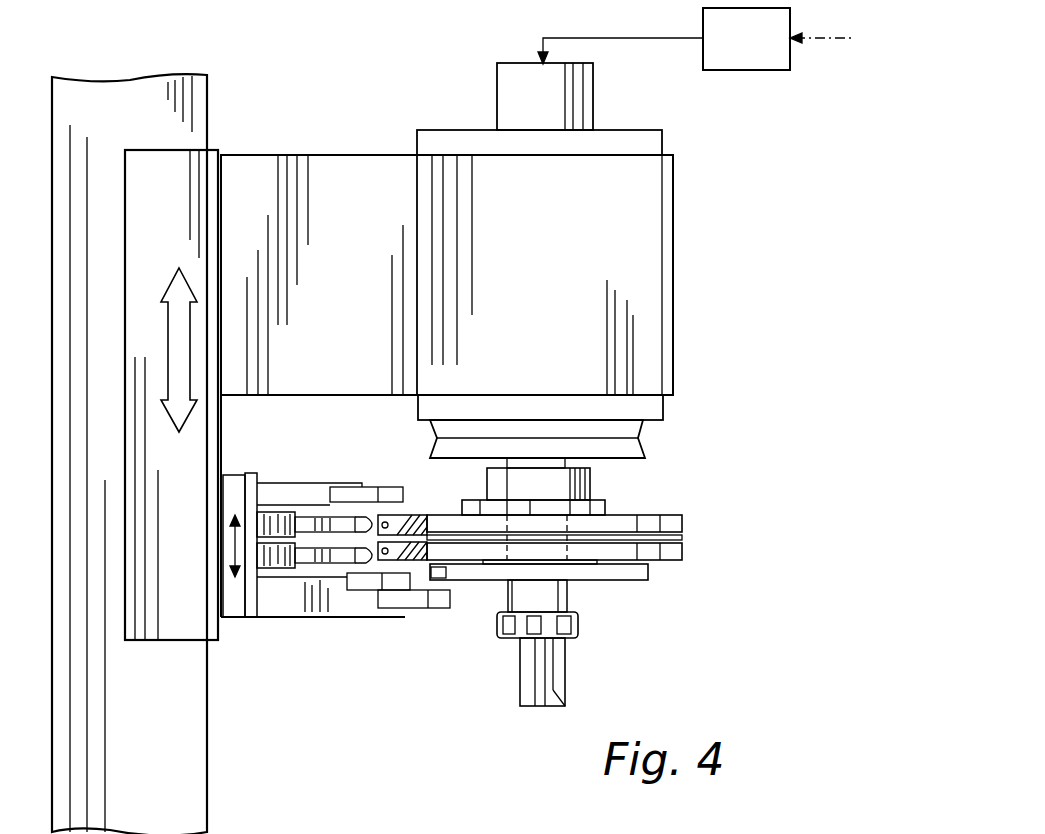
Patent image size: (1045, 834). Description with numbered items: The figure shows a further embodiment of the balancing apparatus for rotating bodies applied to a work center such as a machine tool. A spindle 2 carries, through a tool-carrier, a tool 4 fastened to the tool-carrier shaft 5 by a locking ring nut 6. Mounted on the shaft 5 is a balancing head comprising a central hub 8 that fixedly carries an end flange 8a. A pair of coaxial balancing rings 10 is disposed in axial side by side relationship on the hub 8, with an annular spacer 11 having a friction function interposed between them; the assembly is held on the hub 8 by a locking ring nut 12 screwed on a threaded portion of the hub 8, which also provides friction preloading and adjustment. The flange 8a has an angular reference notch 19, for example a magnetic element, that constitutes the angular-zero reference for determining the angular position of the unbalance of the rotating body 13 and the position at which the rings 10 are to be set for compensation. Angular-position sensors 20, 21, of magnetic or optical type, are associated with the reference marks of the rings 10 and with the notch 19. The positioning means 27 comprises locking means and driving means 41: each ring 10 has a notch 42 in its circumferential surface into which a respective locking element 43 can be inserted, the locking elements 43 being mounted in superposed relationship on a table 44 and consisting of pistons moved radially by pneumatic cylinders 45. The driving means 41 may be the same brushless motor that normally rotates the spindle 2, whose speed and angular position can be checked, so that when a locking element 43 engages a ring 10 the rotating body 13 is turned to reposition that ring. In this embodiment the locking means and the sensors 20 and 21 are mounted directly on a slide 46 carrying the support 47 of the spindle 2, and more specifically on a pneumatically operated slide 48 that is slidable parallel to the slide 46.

The spindle 2 is at (660, 410).
The tool 4 is at (556, 680).
The tool-carrier shaft 5 is at (562, 603).
The locking ring nut 6 is at (580, 636).
The central hub 8 is at (605, 486).
The end flange 8a is at (627, 582).
The balancing rings 10 is at (698, 524).
The annular spacer 11 is at (682, 538).
The locking ring nut 12 is at (607, 505).
The rotating body 13 is at (670, 458).
The angular reference notch 19 is at (446, 580).
The angular-position sensor 20 is at (392, 488).
The angular-position sensor 21 is at (435, 609).
The positioning means 27 is at (338, 462).
The driving means 41 is at (733, 56).
The notch 42 is at (388, 515).
The locking element 43 is at (362, 522).
The fixed table 44 is at (303, 568).
The pneumatic cylinder 45 is at (272, 514).
The slide 46 is at (176, 588).
The support 47 is at (590, 226).
The slide 48 is at (223, 486).